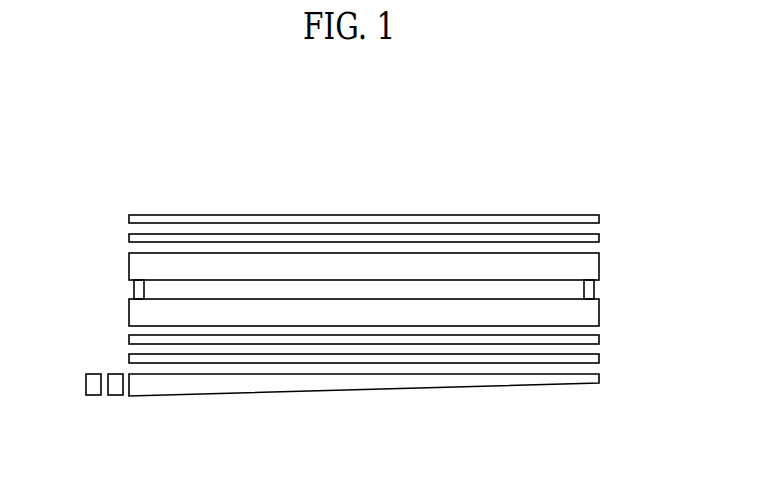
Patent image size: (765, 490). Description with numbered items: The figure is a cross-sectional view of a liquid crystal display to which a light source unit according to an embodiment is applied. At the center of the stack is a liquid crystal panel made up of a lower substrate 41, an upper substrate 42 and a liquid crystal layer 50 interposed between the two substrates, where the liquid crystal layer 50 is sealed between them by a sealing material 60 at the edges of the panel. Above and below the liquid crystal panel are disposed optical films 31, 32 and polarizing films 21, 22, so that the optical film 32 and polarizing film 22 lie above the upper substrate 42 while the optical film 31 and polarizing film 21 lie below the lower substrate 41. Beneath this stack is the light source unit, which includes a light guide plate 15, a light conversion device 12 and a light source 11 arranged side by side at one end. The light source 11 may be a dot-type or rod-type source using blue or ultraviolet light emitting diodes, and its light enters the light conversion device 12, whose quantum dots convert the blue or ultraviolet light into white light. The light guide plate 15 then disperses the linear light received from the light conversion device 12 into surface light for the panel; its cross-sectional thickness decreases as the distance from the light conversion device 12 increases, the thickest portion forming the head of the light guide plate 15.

The light source 11 is at (92, 396).
The light conversion device 12 is at (116, 396).
The light guide plate 15 is at (270, 383).
The polarizing film 21 is at (594, 359).
The polarizing film 22 is at (593, 218).
The optical film 31 is at (594, 339).
The optical film 32 is at (593, 238).
The lower substrate 41 is at (586, 313).
The upper substrate 42 is at (590, 266).
The liquid crystal layer 50 is at (160, 291).
The sealing material 60 is at (590, 288).